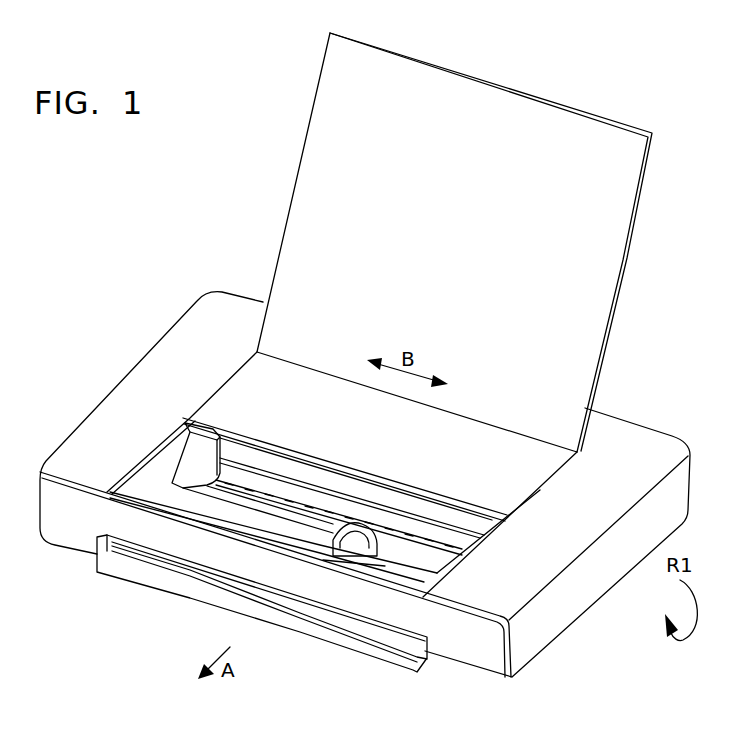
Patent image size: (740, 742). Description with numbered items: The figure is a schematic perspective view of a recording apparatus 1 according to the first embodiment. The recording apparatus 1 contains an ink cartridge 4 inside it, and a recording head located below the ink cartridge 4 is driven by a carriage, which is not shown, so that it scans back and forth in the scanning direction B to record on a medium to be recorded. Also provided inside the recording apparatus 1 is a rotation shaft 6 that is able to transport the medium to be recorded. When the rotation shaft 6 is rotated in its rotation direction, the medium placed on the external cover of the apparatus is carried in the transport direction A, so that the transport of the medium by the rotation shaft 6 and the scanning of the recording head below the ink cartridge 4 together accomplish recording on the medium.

The recording apparatus 1 is at (641, 80).
The ink cartridge 4 is at (163, 465).
The rotation shaft 6 is at (312, 502).